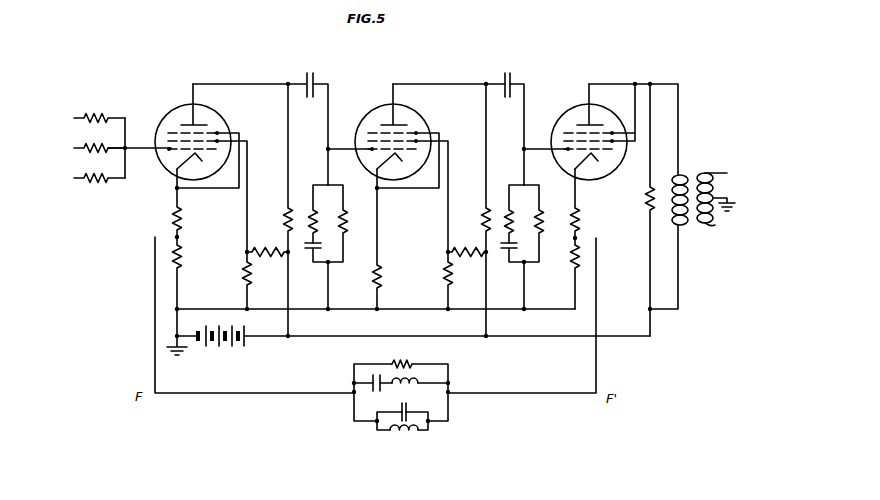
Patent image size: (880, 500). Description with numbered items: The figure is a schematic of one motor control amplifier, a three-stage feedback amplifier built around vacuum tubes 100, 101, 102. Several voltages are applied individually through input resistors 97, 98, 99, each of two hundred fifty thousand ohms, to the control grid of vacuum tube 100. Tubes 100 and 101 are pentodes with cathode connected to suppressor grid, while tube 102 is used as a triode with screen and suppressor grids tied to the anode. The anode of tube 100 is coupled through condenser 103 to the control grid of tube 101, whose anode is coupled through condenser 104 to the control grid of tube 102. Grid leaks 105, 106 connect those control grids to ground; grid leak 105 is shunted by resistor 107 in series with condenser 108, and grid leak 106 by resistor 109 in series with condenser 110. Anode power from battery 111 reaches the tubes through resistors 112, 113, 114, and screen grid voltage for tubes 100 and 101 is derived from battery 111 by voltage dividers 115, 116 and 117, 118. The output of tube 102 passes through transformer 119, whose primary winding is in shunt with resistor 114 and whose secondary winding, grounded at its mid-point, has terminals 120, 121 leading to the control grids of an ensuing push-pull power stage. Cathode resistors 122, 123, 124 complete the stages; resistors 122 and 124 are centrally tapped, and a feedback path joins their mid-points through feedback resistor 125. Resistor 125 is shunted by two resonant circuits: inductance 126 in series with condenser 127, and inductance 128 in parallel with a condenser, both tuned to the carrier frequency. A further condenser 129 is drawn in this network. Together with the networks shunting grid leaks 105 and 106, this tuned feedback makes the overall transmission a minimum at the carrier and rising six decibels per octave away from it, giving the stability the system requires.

The input resistor 97 is at (84, 114).
The input resistor 98 is at (84, 145).
The input resistor 99 is at (84, 175).
The vacuum tube 100 is at (169, 114).
The vacuum tube 101 is at (373, 114).
The vacuum tube 102 is at (573, 114).
The condenser 103 is at (304, 76).
The condenser 104 is at (502, 76).
The grid leak 105 is at (344, 242).
The grid leak 106 is at (542, 240).
The resistor 107 is at (311, 215).
The condenser 108 is at (306, 254).
The resistor 109 is at (506, 208).
The condenser 110 is at (503, 258).
The battery 111 is at (232, 346).
The resistor 112 is at (285, 212).
The resistor 113 is at (485, 212).
The resistor 114 is at (645, 196).
The voltage divider resistor 115 is at (256, 256).
The voltage divider resistor 116 is at (243, 274).
The voltage divider resistor 117 is at (468, 250).
The voltage divider resistor 118 is at (451, 286).
The transformer 119 is at (689, 230).
The terminal 120 is at (727, 174).
The terminal 121 is at (727, 233).
The cathode resistor 122 is at (179, 246).
The biasing resistor 123 is at (381, 286).
The cathode resistor 124 is at (580, 242).
The feedback resistor 125 is at (412, 362).
The inductance 126 is at (417, 387).
The condenser 127 is at (354, 383).
The inductance 128 is at (418, 434).
The feedback capacitor 129 is at (397, 405).